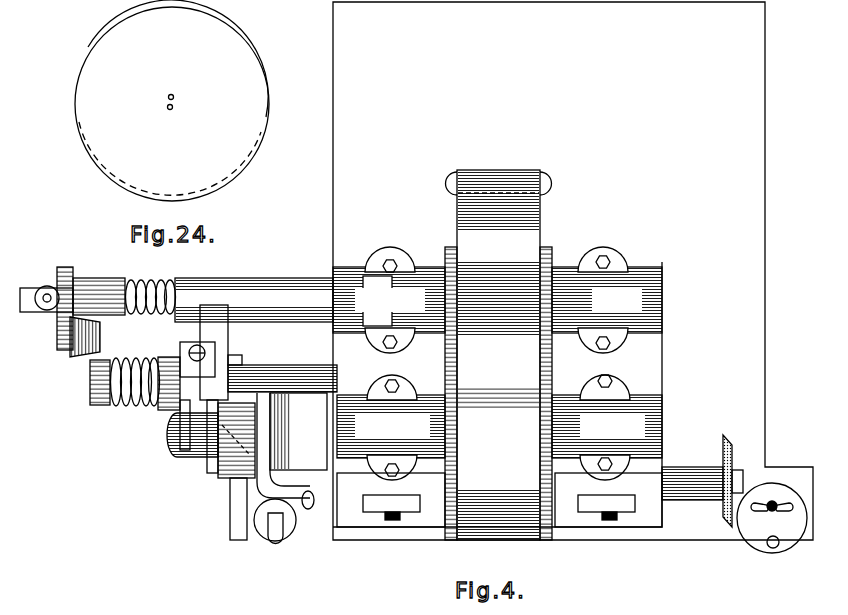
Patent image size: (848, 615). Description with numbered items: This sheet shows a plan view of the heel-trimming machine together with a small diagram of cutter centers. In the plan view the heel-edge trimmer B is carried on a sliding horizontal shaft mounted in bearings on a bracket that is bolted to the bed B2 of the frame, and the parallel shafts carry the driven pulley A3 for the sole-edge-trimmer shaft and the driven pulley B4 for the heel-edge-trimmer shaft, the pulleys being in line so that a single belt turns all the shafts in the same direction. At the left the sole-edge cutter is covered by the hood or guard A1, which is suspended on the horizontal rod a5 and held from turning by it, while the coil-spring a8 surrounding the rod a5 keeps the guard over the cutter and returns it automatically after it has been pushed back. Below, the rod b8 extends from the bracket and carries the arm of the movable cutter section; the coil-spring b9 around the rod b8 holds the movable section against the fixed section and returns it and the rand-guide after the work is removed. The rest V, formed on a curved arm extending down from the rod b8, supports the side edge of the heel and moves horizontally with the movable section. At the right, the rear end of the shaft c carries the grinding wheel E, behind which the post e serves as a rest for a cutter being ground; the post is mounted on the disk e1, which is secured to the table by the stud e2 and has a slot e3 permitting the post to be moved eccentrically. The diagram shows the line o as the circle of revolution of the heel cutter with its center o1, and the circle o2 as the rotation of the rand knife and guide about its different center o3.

In FIG. 24, the circle of revolution of the heel cutter o is at (108, 27).
In FIG. 24, the center of the heel-cutter circle o1 is at (173, 108).
In FIG. 24, the circle of rotation of the rand knife and guide o2 is at (230, 10).
In FIG. 24, the center of the rand-knife circle o3 is at (174, 93).
In FIG. 4, the heel-edge trimmer B is at (499, 355).
In FIG. 4, the bed B2 is at (573, 271).
In FIG. 4, the driven pulley B4 is at (552, 382).
In FIG. 4, the driven pulley A3 is at (552, 248).
In FIG. 4, the horizontal rod a5 is at (66, 270).
In FIG. 4, the coil-spring a8 is at (158, 280).
In FIG. 4, the hood or guard A1 is at (80, 358).
In FIG. 4, the rod b8 is at (258, 352).
In FIG. 4, the coil-spring b9 is at (137, 408).
In FIG. 4, the rest V is at (232, 512).
In FIG. 4, the horizontal shaft c is at (688, 470).
In FIG. 4, the grinding wheel E is at (740, 434).
In FIG. 4, the post e is at (770, 549).
In FIG. 4, the disk e1 is at (790, 540).
In FIG. 4, the stud e2 is at (776, 500).
In FIG. 4, the slot e3 is at (786, 506).